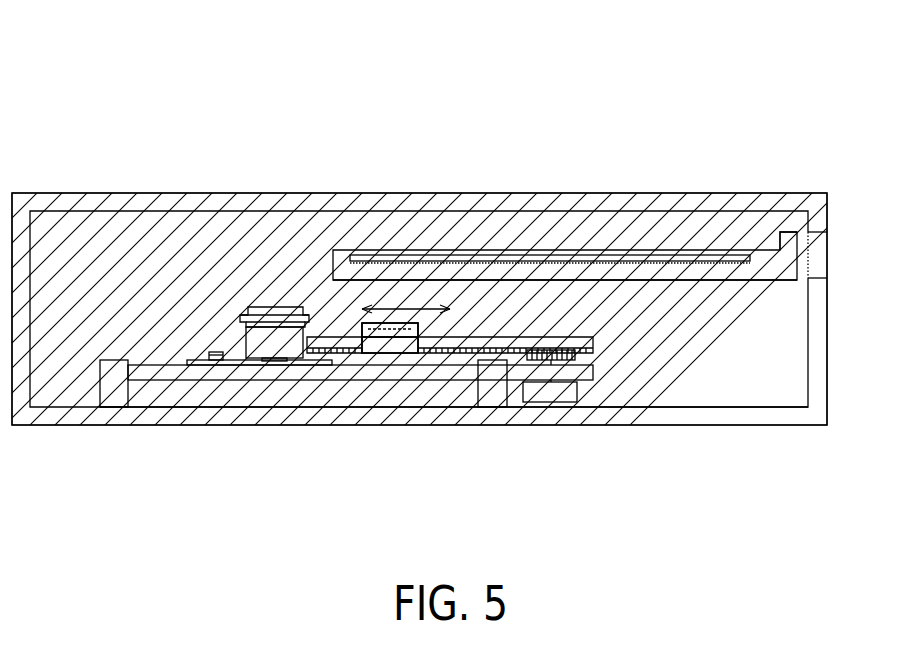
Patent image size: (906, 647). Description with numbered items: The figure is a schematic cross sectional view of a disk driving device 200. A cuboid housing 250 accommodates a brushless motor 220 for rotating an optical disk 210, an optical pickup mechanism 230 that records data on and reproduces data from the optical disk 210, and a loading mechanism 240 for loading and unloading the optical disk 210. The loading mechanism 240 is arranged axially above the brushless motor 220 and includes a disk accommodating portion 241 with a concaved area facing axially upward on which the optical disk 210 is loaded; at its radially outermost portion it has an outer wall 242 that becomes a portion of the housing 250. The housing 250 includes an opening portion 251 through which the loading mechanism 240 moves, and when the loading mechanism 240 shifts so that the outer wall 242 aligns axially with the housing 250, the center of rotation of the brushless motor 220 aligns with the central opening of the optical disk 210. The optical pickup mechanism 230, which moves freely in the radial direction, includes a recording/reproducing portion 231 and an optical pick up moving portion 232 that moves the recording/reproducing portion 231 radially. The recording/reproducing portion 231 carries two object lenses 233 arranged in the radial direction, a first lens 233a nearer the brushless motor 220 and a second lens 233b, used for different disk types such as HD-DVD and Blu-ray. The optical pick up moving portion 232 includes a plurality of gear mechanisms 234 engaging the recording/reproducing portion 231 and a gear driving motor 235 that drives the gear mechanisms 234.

The disk driving device 200 is at (100, 82).
The optical disk 210 is at (468, 258).
The brushless motor 220 is at (245, 337).
The optical pickup mechanism 230 is at (603, 358).
The recording/reproducing portion 231 is at (385, 345).
The optical pick up moving portion 232 is at (533, 405).
The object lenses 233 is at (388, 323).
The first lens 233a is at (369, 325).
The second lens 233b is at (410, 325).
The gear mechanisms 234 is at (583, 350).
The gear driving motor 235 is at (558, 393).
The loading mechanism 240 is at (735, 290).
The disk accommodating portion 241 is at (637, 262).
The outer wall 242 is at (788, 248).
The housing 250 is at (663, 200).
The opening portion 251 is at (818, 260).